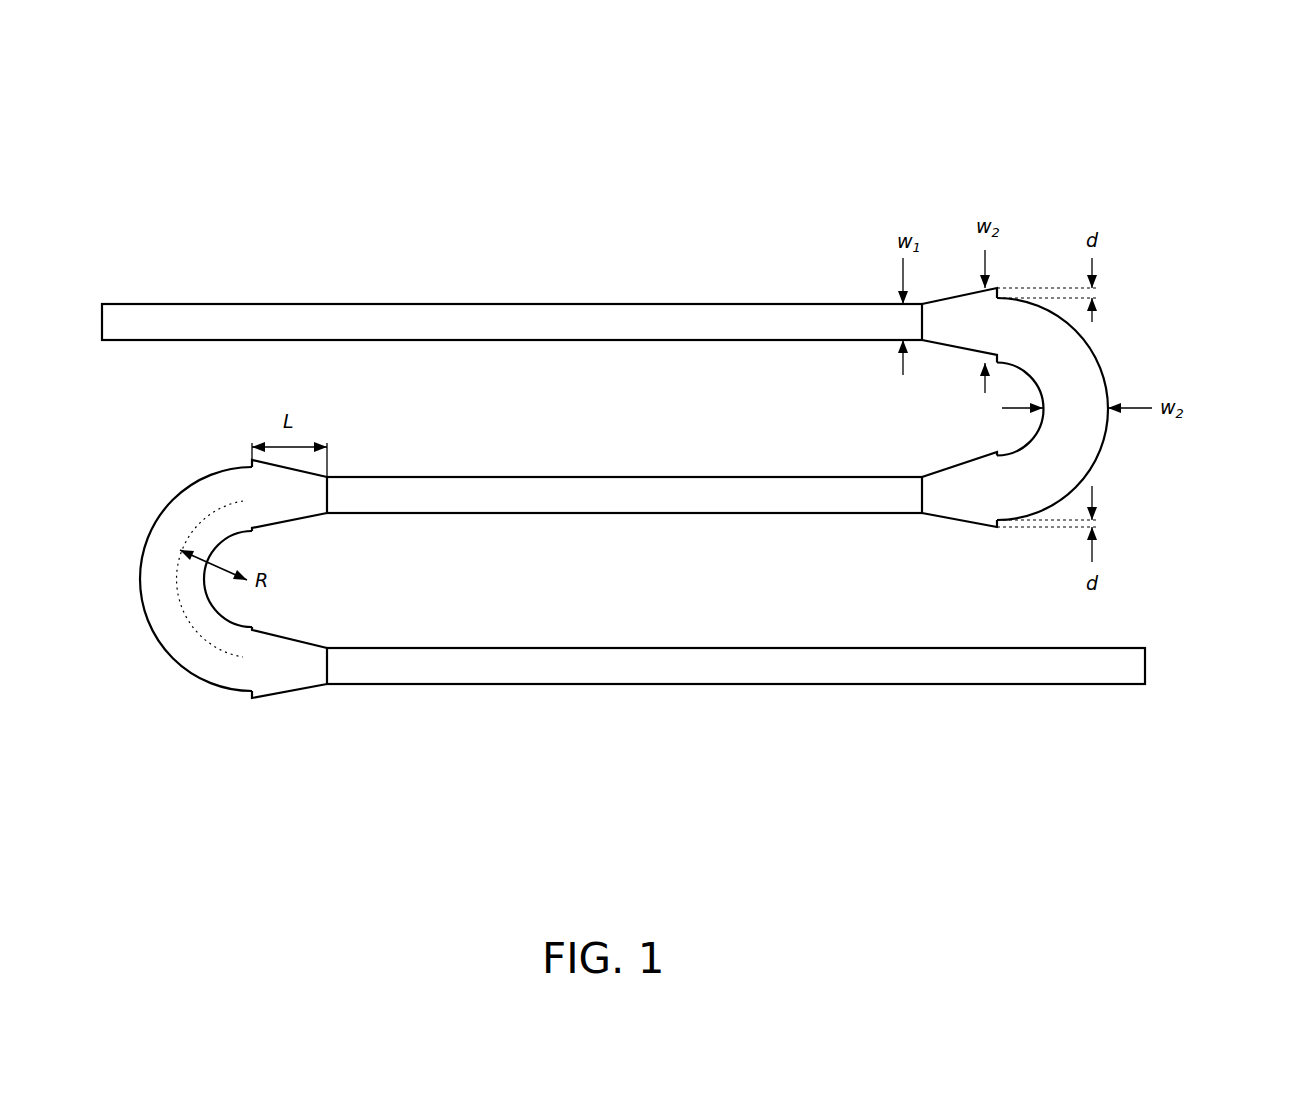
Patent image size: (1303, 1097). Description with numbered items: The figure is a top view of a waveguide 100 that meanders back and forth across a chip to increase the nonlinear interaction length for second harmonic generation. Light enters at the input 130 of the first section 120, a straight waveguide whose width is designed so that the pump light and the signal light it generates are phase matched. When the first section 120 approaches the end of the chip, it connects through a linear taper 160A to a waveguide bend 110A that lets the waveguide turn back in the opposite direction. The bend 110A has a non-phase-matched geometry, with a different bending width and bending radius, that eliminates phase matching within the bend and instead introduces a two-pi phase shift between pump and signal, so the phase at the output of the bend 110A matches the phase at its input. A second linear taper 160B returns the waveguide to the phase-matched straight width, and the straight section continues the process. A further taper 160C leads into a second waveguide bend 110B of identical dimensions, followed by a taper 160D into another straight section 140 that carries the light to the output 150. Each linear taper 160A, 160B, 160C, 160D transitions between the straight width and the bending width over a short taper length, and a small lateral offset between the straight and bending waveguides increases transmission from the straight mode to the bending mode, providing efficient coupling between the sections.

The waveguide 100 is at (1212, 118).
The waveguide bend 110A is at (1103, 370).
The waveguide bend 110B is at (142, 573).
The first section 120 is at (577, 303).
The input 130 is at (73, 313).
The section 140 is at (815, 647).
The output 150 is at (1180, 653).
The linear taper 160A is at (962, 350).
The linear taper 160B is at (945, 518).
The linear taper 160C is at (287, 522).
The linear taper 160D is at (300, 642).